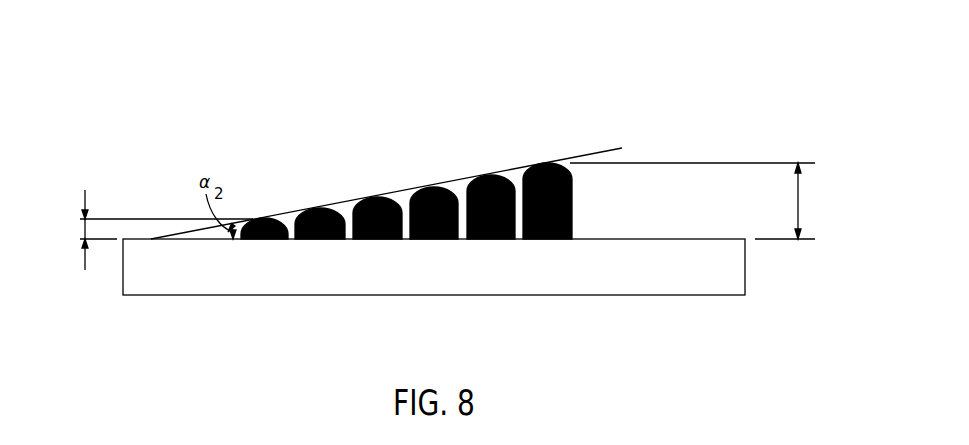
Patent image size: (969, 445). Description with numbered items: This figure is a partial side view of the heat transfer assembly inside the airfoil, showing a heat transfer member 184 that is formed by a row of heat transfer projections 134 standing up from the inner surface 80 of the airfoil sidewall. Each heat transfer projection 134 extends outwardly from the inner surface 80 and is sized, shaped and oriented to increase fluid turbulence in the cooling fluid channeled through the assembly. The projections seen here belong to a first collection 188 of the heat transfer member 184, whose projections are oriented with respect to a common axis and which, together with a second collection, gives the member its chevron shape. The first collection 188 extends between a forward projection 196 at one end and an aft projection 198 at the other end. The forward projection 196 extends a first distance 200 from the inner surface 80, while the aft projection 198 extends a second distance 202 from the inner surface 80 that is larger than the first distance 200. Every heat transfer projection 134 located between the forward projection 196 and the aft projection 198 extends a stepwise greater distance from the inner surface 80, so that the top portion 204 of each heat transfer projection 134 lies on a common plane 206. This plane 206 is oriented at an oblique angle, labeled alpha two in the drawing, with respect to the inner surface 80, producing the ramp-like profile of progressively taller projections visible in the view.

The inner surface 80 is at (660, 238).
The heat transfer projection 134 is at (477, 185).
The heat transfer member 184 is at (533, 103).
The first collection 188 is at (416, 130).
The forward projection 196 is at (266, 218).
The aft projection 198 is at (550, 162).
The first distance 200 is at (86, 202).
The second distance 202 is at (800, 202).
The top portion 204 is at (379, 197).
The plane 206 is at (590, 152).